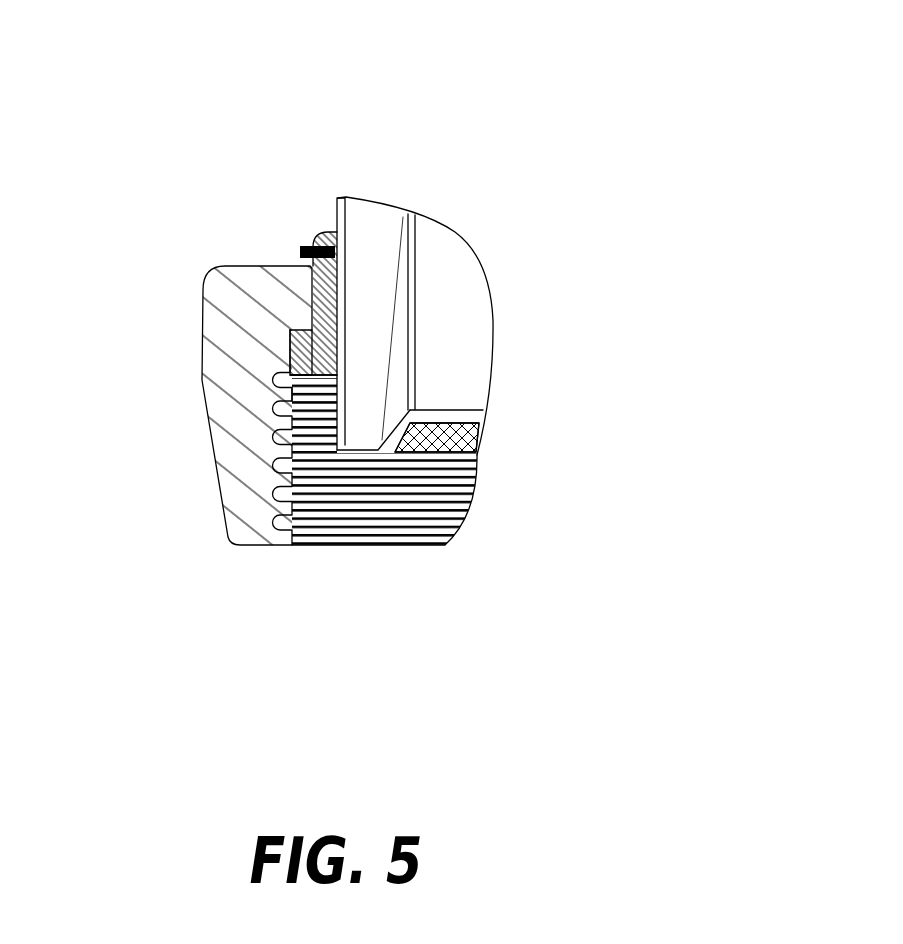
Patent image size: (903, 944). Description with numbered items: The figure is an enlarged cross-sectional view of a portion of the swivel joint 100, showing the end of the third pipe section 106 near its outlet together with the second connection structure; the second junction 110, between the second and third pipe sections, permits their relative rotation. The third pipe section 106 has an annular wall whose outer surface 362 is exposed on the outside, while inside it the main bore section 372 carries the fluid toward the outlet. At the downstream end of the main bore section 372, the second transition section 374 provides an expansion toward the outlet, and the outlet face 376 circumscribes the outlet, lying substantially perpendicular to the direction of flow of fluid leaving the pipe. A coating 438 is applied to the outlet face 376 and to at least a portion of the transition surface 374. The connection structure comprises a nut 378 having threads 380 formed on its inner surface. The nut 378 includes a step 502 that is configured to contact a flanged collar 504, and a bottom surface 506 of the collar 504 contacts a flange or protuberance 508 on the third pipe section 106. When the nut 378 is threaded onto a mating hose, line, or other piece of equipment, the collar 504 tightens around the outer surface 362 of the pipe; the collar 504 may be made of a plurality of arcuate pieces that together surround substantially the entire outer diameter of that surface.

The swivel joint 100 is at (610, 122).
The third pipe section 106 is at (245, 87).
The second junction 110 is at (700, 383).
The outer surface 362 is at (340, 213).
The main bore section 372 is at (440, 303).
The second transition section 374 is at (410, 417).
The outlet face 376 is at (373, 450).
The nut 378 is at (223, 423).
The threads 380 is at (317, 520).
The coating 438 is at (447, 433).
The step 502 is at (302, 335).
The flanged collar 504 is at (323, 302).
The bottom surface 506 is at (295, 382).
The flange or protuberance 508 is at (326, 380).